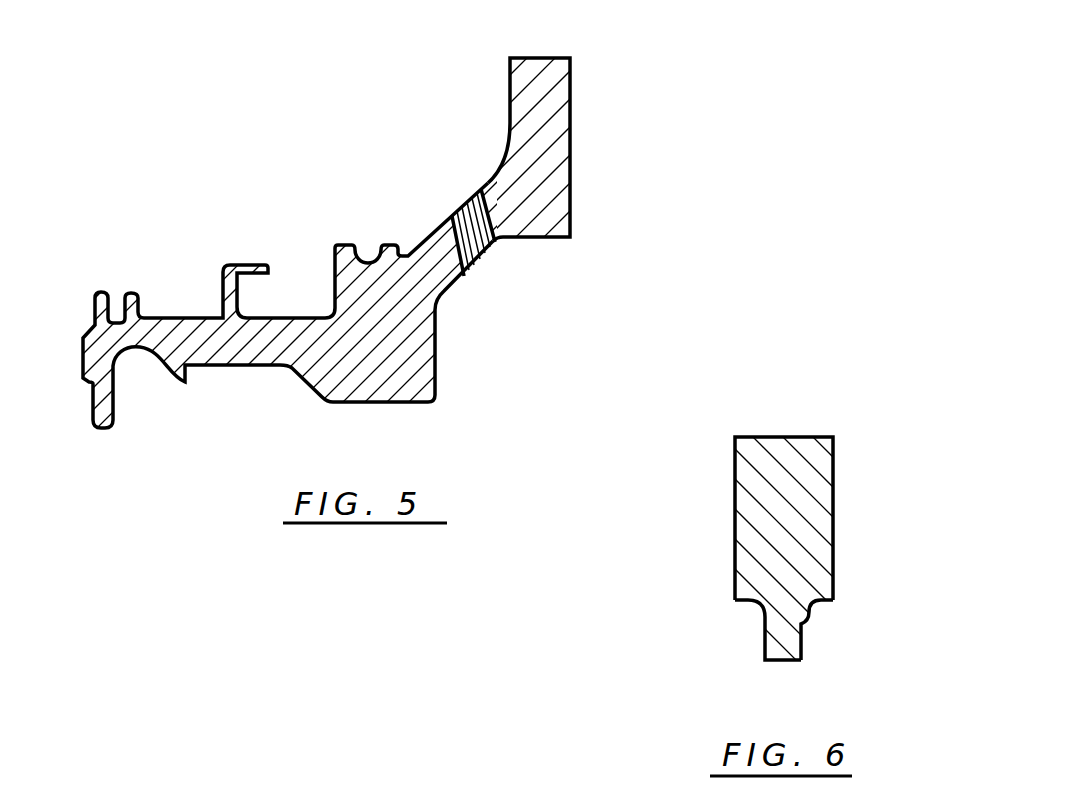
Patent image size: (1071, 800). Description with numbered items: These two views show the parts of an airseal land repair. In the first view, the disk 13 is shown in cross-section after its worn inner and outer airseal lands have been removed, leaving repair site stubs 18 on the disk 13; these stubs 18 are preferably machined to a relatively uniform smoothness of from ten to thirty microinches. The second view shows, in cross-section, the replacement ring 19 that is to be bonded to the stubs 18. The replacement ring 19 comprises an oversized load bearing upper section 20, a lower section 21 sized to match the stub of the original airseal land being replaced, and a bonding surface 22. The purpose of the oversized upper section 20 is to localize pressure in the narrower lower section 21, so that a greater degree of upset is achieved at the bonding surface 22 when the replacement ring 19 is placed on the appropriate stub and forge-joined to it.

In FIG. 5, the disk 13 is at (508, 103).
In FIG. 5, the repair site stubs 18 is at (388, 243).
In FIG. 6, the replacement ring 19 is at (793, 533).
In FIG. 6, the oversized load bearing upper section 20 is at (788, 520).
In FIG. 6, the lower section 21 is at (810, 628).
In FIG. 6, the bonding surface 22 is at (779, 662).